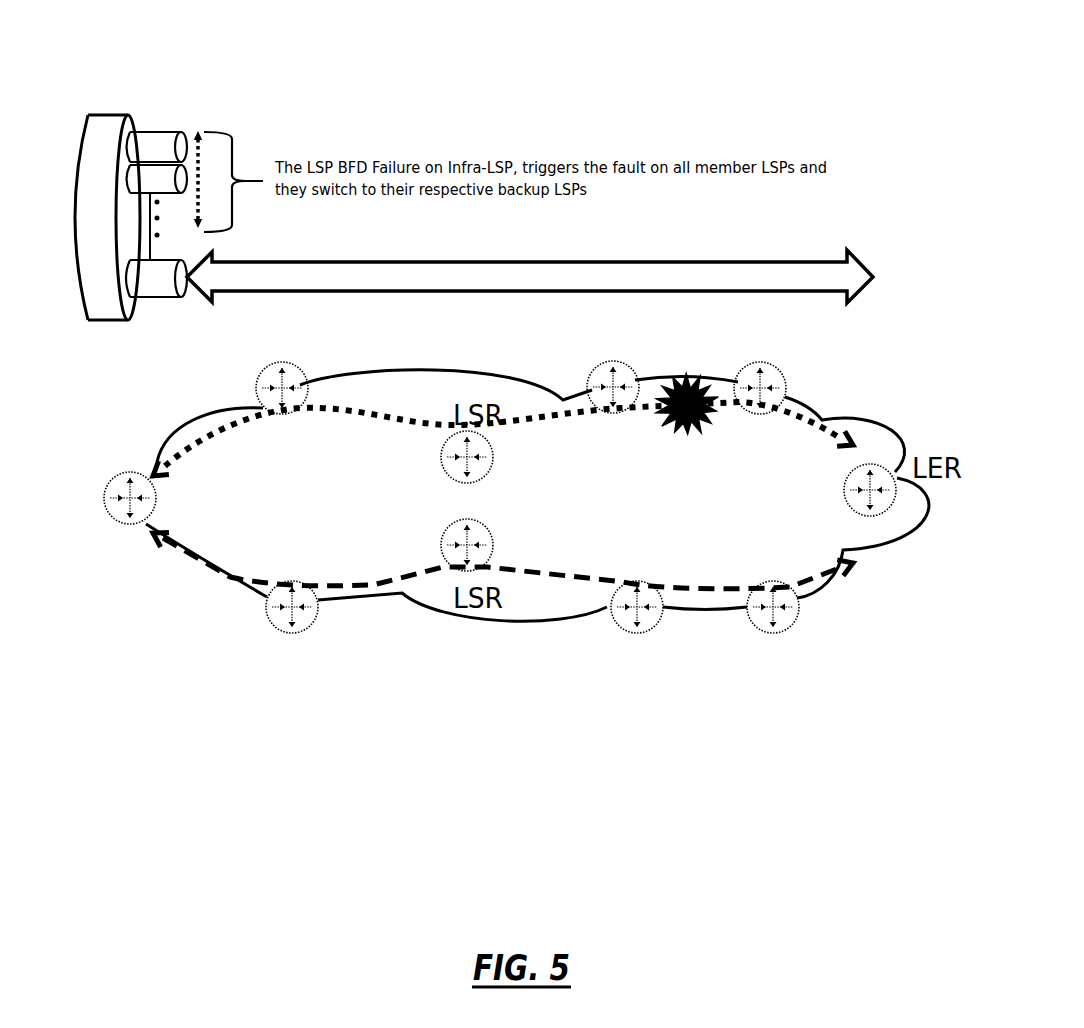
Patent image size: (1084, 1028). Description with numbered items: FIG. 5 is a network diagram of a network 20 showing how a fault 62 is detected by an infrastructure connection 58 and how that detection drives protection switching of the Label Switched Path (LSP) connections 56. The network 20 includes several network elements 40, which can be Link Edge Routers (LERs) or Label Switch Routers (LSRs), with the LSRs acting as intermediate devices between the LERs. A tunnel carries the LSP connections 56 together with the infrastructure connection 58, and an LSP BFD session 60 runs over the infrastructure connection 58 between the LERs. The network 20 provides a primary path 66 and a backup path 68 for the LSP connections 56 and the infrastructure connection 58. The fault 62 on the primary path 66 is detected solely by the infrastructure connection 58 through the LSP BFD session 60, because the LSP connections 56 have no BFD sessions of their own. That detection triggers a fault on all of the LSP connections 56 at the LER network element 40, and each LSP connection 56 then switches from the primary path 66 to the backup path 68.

The network system 20 is at (532, 63).
The network element 40 is at (118, 524).
The LSP connections 56 is at (189, 131).
The infrastructure connection 58 is at (168, 261).
The LSP BFD session 60 is at (548, 262).
The fault 62 is at (660, 427).
The primary path 66 is at (430, 423).
The backup path 68 is at (236, 576).